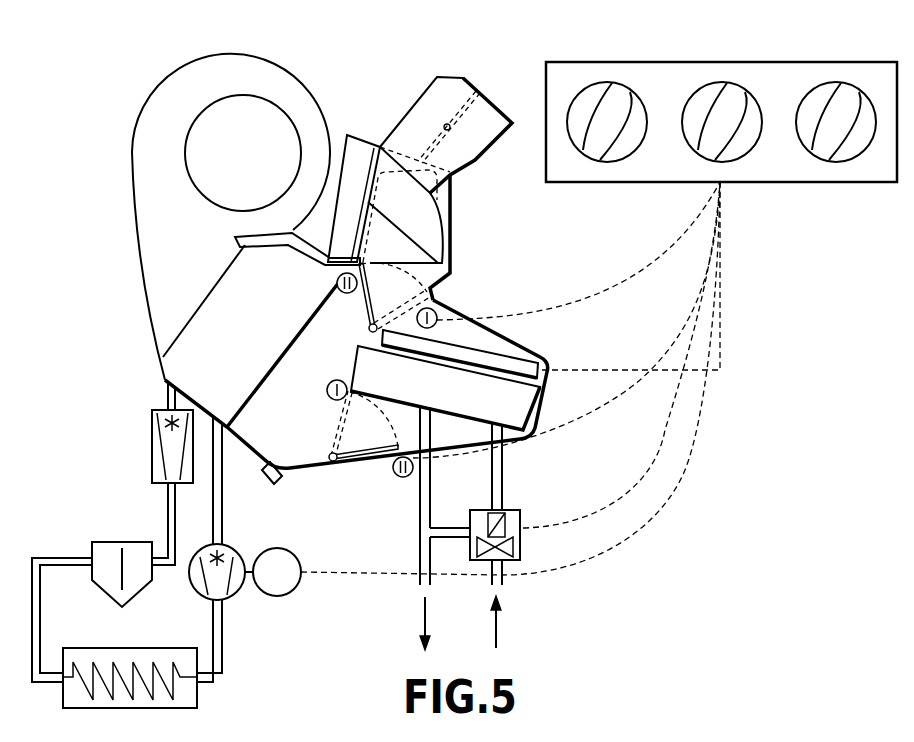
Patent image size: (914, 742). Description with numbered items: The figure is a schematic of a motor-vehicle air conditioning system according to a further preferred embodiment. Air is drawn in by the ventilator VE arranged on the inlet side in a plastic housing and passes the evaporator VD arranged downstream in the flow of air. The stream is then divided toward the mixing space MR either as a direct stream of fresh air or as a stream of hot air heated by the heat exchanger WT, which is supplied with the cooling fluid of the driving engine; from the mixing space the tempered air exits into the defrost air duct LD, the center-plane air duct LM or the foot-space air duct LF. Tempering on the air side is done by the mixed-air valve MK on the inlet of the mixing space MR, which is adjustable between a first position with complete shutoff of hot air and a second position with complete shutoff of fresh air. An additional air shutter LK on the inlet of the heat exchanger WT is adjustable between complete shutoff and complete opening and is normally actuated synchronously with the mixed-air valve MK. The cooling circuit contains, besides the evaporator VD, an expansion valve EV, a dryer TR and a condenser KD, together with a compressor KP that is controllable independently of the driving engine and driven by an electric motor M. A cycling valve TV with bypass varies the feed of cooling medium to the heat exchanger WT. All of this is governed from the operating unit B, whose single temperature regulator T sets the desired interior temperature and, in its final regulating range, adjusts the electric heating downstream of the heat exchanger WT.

The ventilator VE is at (140, 177).
The evaporator VD is at (187, 330).
The defrost air duct LD is at (357, 134).
The center-plane air duct LM is at (444, 75).
The foot space air duct LF is at (432, 236).
The mixing space MR is at (433, 290).
The mixed-air valve MK is at (361, 300).
The air shutter LK is at (337, 463).
The heat exchanger WT is at (527, 402).
The expansion valve EV is at (150, 448).
The dryer TR is at (112, 542).
The condenser KD is at (118, 648).
The compressor KP is at (207, 600).
The electric motor M is at (287, 597).
The cycling valve TV is at (513, 547).
The temperature regulator T is at (733, 92).
The operating unit B is at (828, 60).